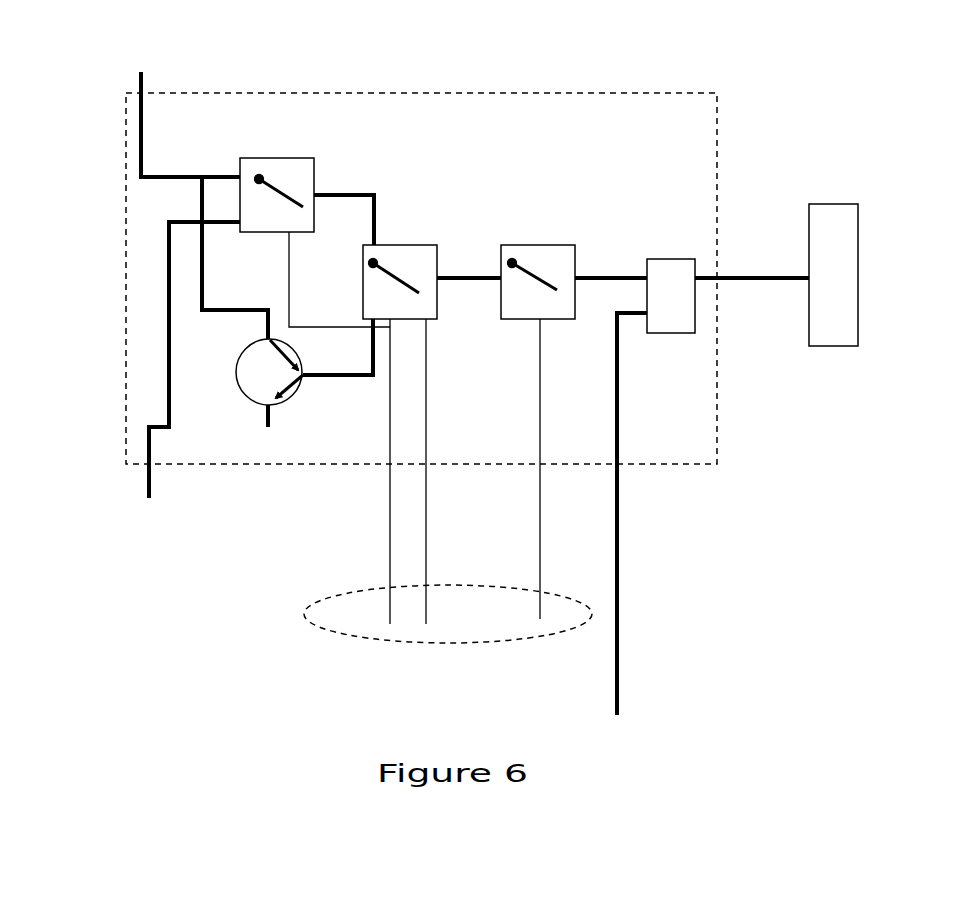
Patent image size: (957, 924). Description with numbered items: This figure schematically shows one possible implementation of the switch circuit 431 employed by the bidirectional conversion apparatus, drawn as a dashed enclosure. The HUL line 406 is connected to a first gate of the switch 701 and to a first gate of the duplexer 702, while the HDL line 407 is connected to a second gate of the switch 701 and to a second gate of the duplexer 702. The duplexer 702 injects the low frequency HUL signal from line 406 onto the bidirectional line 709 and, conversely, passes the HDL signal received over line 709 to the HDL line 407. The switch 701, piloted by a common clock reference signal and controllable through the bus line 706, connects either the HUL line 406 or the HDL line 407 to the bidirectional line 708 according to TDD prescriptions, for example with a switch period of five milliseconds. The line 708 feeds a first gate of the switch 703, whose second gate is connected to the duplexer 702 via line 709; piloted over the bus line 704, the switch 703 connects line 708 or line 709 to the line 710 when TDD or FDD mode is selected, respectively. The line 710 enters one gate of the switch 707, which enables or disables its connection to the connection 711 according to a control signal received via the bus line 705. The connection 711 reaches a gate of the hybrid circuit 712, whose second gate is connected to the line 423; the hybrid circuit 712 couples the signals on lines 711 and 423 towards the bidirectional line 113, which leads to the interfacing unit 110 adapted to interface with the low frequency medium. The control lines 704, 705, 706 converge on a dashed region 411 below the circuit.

The switch circuit 431 is at (428, 112).
The HUL line 406 is at (138, 72).
The HDL line 407 is at (138, 487).
The switch 701 is at (300, 158).
The duplexer 702 is at (236, 366).
The switch 703 is at (419, 245).
The bus line 704 is at (428, 508).
The bus line 705 is at (541, 534).
The bus line 706 is at (390, 532).
The switch 707 is at (546, 245).
The line 708 is at (371, 195).
The bidirectional line 709 is at (330, 378).
The line 710 is at (455, 280).
The connection 711 is at (616, 278).
The hybrid circuit 712 is at (677, 259).
The bidirectional line 113 is at (787, 278).
The interfacing unit 110 is at (837, 204).
The line 423 is at (623, 605).
The controller 411 is at (305, 616).